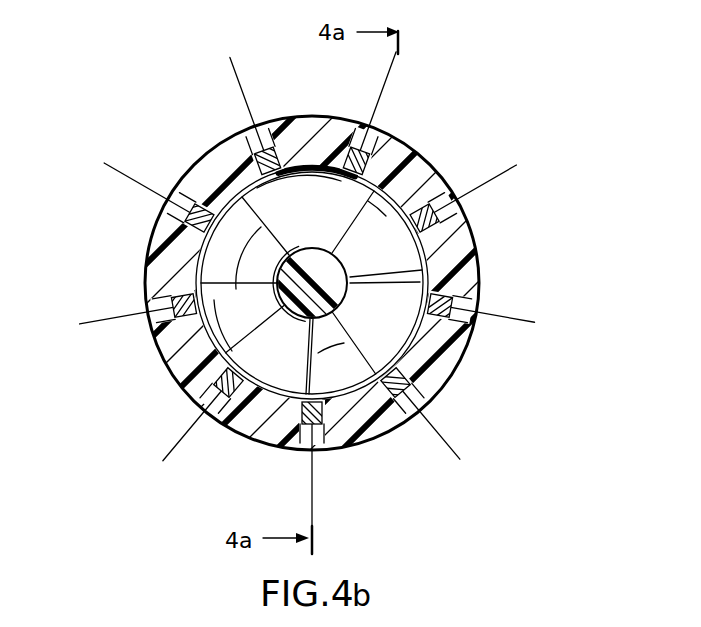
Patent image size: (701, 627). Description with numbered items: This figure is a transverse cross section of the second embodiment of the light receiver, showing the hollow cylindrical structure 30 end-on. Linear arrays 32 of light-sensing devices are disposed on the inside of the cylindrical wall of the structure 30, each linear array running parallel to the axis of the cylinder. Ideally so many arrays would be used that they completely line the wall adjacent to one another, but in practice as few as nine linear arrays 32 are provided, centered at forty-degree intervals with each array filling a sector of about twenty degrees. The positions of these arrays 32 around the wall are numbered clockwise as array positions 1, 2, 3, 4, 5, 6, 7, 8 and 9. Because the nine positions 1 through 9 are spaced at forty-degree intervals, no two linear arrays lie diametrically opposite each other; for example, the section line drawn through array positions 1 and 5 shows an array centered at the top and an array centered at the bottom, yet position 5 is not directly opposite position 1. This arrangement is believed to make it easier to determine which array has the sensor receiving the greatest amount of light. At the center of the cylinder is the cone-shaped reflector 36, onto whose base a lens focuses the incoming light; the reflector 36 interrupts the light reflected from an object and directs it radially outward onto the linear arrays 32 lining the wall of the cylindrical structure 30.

The array position 1 is at (372, 146).
The array position 2 is at (438, 217).
The array position 3 is at (452, 316).
The array position 4 is at (404, 398).
The array position 5 is at (306, 432).
The array position 6 is at (217, 396).
The array position 7 is at (171, 305).
The array position 8 is at (191, 207).
The array position 9 is at (291, 127).
The hollow cylindrical structure 30 is at (429, 164).
The linear arrays of light-sensing devices 32 is at (320, 182).
The cone-shaped reflector 36 is at (220, 267).